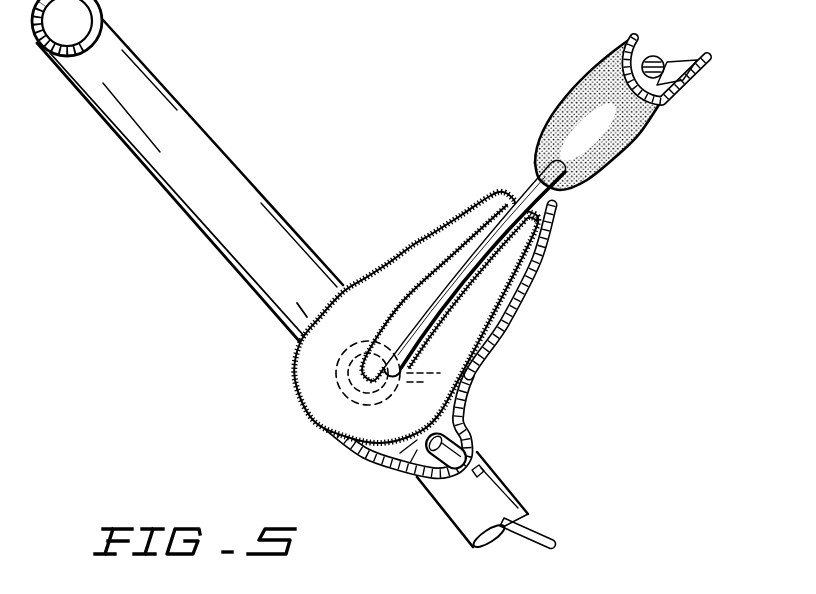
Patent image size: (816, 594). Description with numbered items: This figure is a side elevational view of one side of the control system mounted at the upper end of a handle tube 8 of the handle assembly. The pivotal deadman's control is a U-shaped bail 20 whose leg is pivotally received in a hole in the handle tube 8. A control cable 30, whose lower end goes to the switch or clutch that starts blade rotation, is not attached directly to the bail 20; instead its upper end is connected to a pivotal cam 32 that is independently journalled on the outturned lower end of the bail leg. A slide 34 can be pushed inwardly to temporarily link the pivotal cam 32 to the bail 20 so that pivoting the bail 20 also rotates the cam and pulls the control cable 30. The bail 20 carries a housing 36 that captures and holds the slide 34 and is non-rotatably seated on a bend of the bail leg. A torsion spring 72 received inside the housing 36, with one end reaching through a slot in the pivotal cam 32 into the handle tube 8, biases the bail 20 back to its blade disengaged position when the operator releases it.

The handle tube 8 is at (203, 128).
The bail 20 is at (637, 135).
The control cable 30 is at (537, 523).
The pivotal cam 32 is at (472, 413).
The slide 34 is at (540, 257).
The housing 36 is at (410, 246).
The torsion spring 72 is at (335, 378).